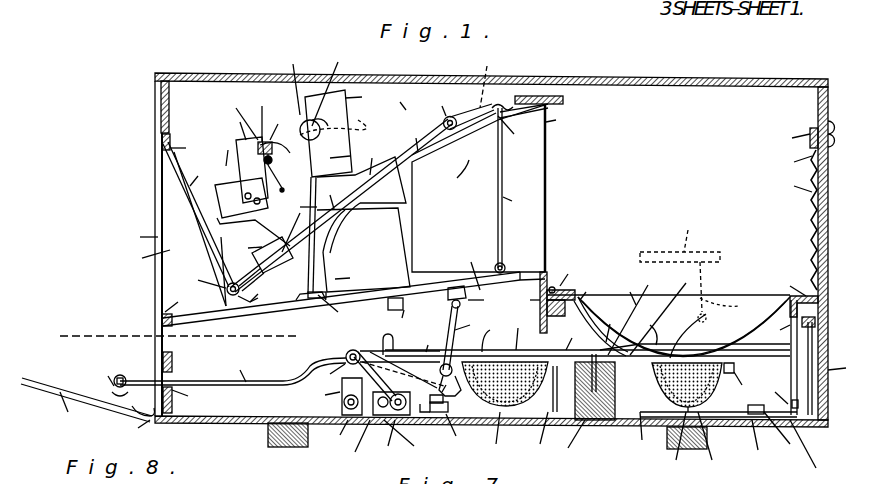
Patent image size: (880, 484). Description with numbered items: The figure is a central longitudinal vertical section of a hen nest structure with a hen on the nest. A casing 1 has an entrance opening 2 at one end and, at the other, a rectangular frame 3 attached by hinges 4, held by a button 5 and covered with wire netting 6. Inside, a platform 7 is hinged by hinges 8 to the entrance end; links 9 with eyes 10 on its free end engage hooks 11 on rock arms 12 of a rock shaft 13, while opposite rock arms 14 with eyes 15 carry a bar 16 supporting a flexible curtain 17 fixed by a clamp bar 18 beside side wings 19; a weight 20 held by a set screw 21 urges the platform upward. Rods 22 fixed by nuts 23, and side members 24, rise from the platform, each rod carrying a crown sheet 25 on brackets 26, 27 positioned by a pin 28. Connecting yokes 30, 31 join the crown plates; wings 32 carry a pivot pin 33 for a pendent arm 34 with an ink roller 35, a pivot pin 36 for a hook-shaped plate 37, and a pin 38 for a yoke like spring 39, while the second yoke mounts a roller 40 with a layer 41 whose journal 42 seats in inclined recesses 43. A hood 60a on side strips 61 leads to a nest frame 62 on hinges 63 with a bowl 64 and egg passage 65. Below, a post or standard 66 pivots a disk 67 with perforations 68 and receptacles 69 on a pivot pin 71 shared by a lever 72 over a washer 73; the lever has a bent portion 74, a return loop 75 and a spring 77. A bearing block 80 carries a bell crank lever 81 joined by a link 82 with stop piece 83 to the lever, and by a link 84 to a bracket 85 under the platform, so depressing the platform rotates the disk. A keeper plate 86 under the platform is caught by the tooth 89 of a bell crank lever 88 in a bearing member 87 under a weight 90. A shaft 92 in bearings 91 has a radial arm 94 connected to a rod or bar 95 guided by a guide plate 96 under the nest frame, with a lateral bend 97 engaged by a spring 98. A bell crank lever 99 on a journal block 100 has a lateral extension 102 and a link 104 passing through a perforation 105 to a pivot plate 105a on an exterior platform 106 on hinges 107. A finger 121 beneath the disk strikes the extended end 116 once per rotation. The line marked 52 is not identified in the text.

The casing 1 is at (491, 248).
The opening 2 is at (138, 239).
The rectangular frame 3 is at (449, 265).
The hinges 4 is at (797, 297).
The button 5 is at (803, 134).
The wire netting 6 is at (795, 220).
The platform 7 is at (480, 267).
The hinges 8 is at (353, 299).
The links 9 is at (511, 188).
The eyes 10 is at (511, 131).
The hooks 11 is at (539, 116).
The rock arms 12 is at (484, 75).
The rock shaft 13 is at (459, 110).
The rock arms 14 is at (341, 205).
The eyes 15 is at (206, 280).
The bar 16 is at (254, 306).
The flexible curtain 17 is at (198, 214).
The clamp bar 18 is at (184, 148).
The side wings 19 is at (169, 229).
The weight 20 is at (266, 283).
The set screw 21 is at (258, 253).
The rods 22 is at (352, 278).
The nuts 23 is at (339, 312).
The side members 24 is at (363, 250).
The crown sheet 25 is at (361, 171).
The bracket 26 is at (336, 217).
The bracket 27 is at (363, 258).
The pin 28 is at (309, 261).
The connecting yoke 30 is at (244, 155).
The connecting yoke 31 is at (364, 99).
The wings 32 is at (260, 121).
The pivot pin 33 is at (278, 136).
The pendent arm 34 is at (216, 162).
The roller 35 is at (288, 197).
The pivot pin 36 is at (328, 133).
The hook-shaped plate 37 is at (251, 212).
The pin 38 is at (232, 114).
The yoke like spring 39 is at (322, 131).
The roller 40 is at (339, 120).
The layer 41 is at (290, 78).
The journal 42 is at (404, 97).
The inclined recesses 43 is at (330, 83).
The water line 52 is at (669, 309).
The hood 60a is at (478, 188).
The side strips 61 is at (525, 302).
The frame 62 is at (573, 295).
The hinges 63 is at (562, 277).
The bowl 64 is at (784, 368).
The passage 65 is at (658, 328).
The post or standard 66 is at (669, 387).
The disk 67 is at (740, 382).
The perforations 68 is at (635, 327).
The receptacle 69 is at (718, 444).
The pivot pin 71 is at (601, 326).
The lever 72 is at (587, 339).
The washer 73 is at (582, 412).
The bent portion 74 is at (628, 314).
The return loop 75 is at (648, 341).
The spring 77 is at (659, 314).
The bearing block 80 is at (389, 430).
The bell crank lever 81 is at (450, 388).
The link 82 is at (505, 359).
The stop piece 83 is at (402, 356).
The link 84 is at (466, 351).
The bracket 85 is at (477, 301).
The keeper plate 86 is at (410, 309).
The bearing member 87 is at (362, 414).
The bell crank lever 88 is at (331, 396).
The tooth 89 is at (390, 333).
The weight 90 is at (442, 430).
The bearings 91 is at (645, 431).
The shaft 92 is at (537, 417).
The radial arm 94 is at (807, 452).
The rod or bar 95 is at (778, 393).
The guide plate 96 is at (777, 357).
The lateral bend 97 is at (709, 448).
The spring 98 is at (672, 448).
The bell crank lever 99 is at (333, 368).
The journal block 100 is at (335, 437).
The lateral extension 102 is at (410, 444).
The link 104 is at (233, 370).
The perforation 105 is at (192, 382).
The pivot plate 105a is at (99, 374).
The platform 106 is at (86, 407).
The hinges 107 is at (128, 427).
The extended end 116 is at (680, 266).
The finger 121 is at (641, 435).